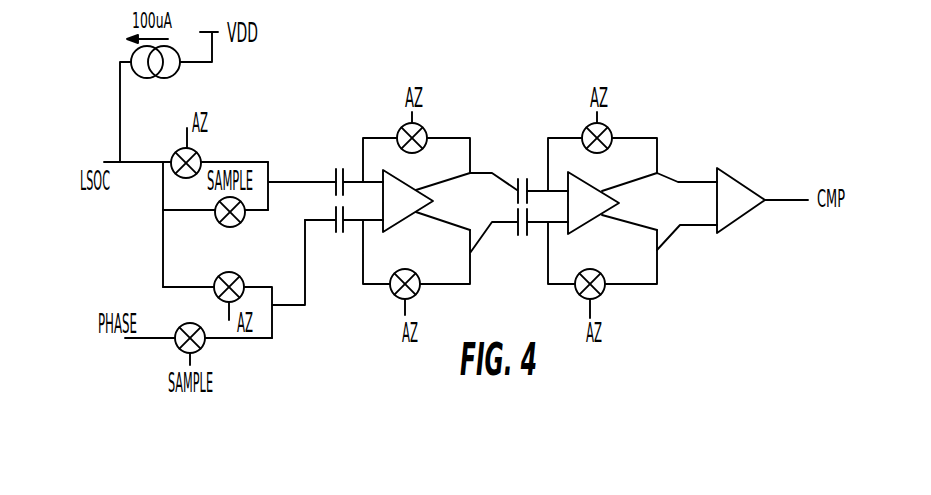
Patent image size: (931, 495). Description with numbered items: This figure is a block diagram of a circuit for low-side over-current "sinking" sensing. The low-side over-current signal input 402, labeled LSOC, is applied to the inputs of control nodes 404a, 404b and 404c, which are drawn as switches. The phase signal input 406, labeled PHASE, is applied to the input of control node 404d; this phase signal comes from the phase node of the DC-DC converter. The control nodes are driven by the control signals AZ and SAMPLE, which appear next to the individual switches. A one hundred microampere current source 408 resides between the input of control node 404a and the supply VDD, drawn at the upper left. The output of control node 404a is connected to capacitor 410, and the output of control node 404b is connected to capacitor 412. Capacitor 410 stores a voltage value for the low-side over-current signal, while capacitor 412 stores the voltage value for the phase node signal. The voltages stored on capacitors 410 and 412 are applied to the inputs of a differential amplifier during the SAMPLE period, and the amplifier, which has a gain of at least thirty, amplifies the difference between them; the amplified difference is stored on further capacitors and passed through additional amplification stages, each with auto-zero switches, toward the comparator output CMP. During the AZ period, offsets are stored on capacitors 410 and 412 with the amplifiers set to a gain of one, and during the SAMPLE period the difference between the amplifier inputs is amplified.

The low-side over-current signal input 402 is at (105, 162).
The control node 404a is at (198, 150).
The control node 404b is at (232, 227).
The control node 404c is at (233, 272).
The control node 404d is at (205, 347).
The phase signal input 406 is at (125, 338).
The current source 408 is at (121, 58).
The capacitor 410 is at (332, 174).
The capacitor 412 is at (333, 216).